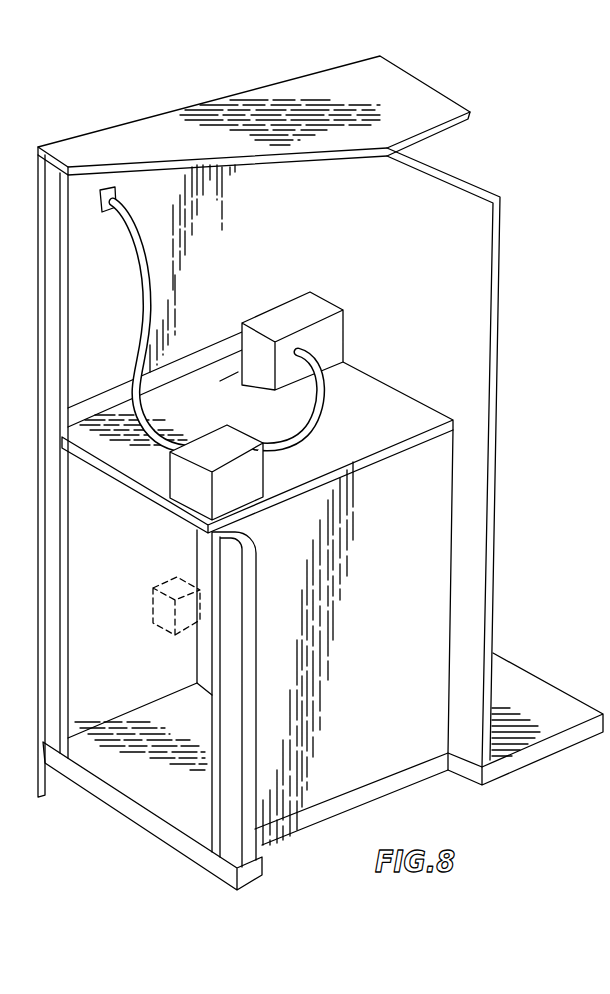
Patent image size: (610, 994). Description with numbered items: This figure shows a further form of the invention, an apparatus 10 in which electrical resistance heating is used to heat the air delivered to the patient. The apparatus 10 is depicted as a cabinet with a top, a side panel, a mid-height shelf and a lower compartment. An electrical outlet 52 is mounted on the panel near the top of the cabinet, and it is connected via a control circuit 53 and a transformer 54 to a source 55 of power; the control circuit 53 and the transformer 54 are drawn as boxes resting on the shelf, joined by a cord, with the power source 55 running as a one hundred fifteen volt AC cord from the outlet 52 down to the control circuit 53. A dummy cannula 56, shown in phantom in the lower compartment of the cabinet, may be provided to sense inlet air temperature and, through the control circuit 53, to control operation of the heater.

The apparatus 10 is at (473, 162).
The electrical outlet 52 is at (117, 194).
The control circuit 53 is at (247, 472).
The transformer 54 is at (318, 298).
The source of power 55 is at (238, 373).
The dummy cannula 56 is at (153, 607).